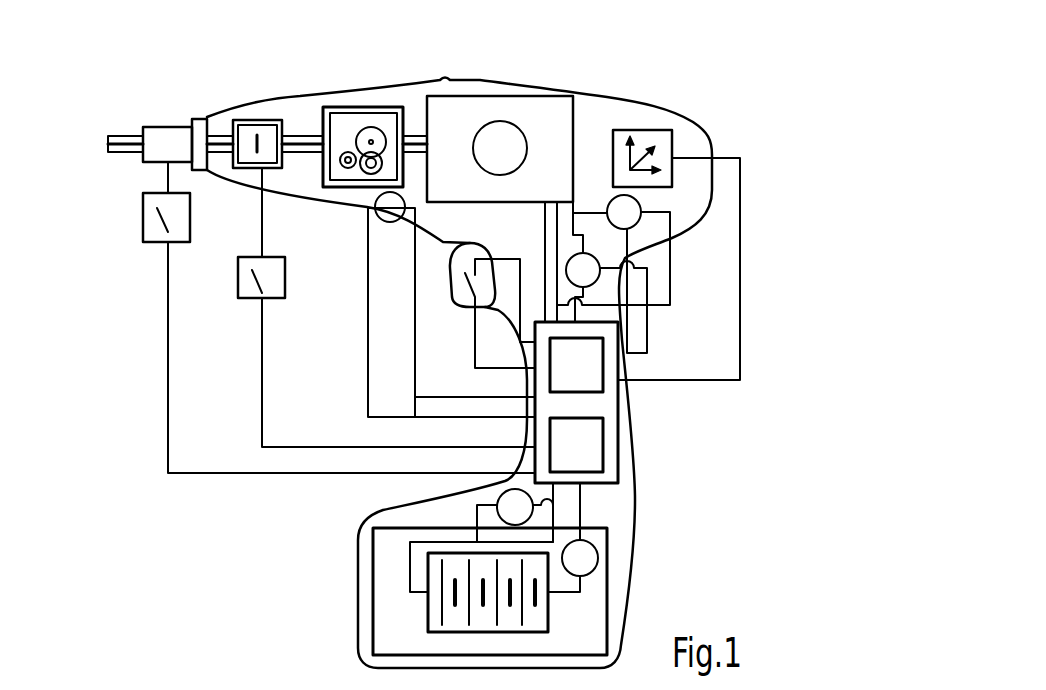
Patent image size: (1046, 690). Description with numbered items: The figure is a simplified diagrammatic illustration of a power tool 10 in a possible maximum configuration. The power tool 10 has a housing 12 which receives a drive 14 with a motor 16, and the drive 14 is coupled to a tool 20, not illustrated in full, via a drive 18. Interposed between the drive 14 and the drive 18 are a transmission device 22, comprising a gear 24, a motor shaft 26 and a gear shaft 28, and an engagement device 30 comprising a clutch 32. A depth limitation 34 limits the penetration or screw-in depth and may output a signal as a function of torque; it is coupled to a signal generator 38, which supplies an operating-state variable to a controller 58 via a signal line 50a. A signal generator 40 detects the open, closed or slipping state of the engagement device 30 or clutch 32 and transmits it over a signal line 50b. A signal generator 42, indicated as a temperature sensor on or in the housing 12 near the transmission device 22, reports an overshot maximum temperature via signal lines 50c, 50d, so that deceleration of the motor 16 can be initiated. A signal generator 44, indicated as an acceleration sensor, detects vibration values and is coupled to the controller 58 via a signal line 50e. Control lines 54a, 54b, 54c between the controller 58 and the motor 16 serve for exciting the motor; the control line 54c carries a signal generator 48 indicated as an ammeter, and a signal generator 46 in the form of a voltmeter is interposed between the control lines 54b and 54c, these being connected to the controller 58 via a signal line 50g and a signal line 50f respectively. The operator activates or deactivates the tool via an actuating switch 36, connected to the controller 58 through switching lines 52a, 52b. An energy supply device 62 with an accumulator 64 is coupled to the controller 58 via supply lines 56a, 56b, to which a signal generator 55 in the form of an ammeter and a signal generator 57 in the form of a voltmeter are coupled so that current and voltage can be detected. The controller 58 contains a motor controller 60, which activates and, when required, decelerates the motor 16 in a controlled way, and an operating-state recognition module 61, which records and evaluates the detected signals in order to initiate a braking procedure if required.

The power tool 10 is at (648, 90).
The housing 12 is at (528, 88).
The drive 14 is at (437, 123).
The motor 16 is at (493, 121).
The drive 18 is at (207, 170).
The tool 20 is at (130, 152).
The transmission device 22 is at (370, 107).
The gear 24 is at (323, 106).
The motor shaft 26 is at (417, 134).
The gear shaft 28 is at (292, 134).
The engagement device 30 is at (253, 120).
The clutch 32 is at (220, 118).
The depth limitation 34 is at (155, 127).
The actuating switch 36 is at (470, 298).
The signal generator 38 is at (143, 232).
The signal generator 40 is at (238, 287).
The signal generator 42 is at (377, 198).
The signal generator 44 is at (665, 128).
The signal generator 46 is at (640, 203).
The signal generator 48 is at (598, 284).
The signal line 50a is at (168, 368).
The signal line 50b is at (262, 405).
The signal line 50c is at (368, 368).
The signal line 50d is at (415, 365).
The signal line 50e is at (740, 330).
The signal line 50f is at (629, 253).
The signal line 50g is at (647, 330).
The switching line 52a is at (493, 262).
The switching line 52b is at (483, 370).
The control line 54a is at (546, 222).
The control line 54b is at (558, 228).
The control line 54c is at (572, 233).
The signal generator 55 is at (596, 570).
The supply line 56a is at (555, 495).
The supply line 56b is at (583, 505).
The signal generator 57 is at (496, 503).
The controller 58 is at (618, 460).
The motor controller 60 is at (603, 418).
The operating-state recognition module 61 is at (604, 376).
The energy supply device 62 is at (607, 562).
The accumulator 64 is at (428, 618).